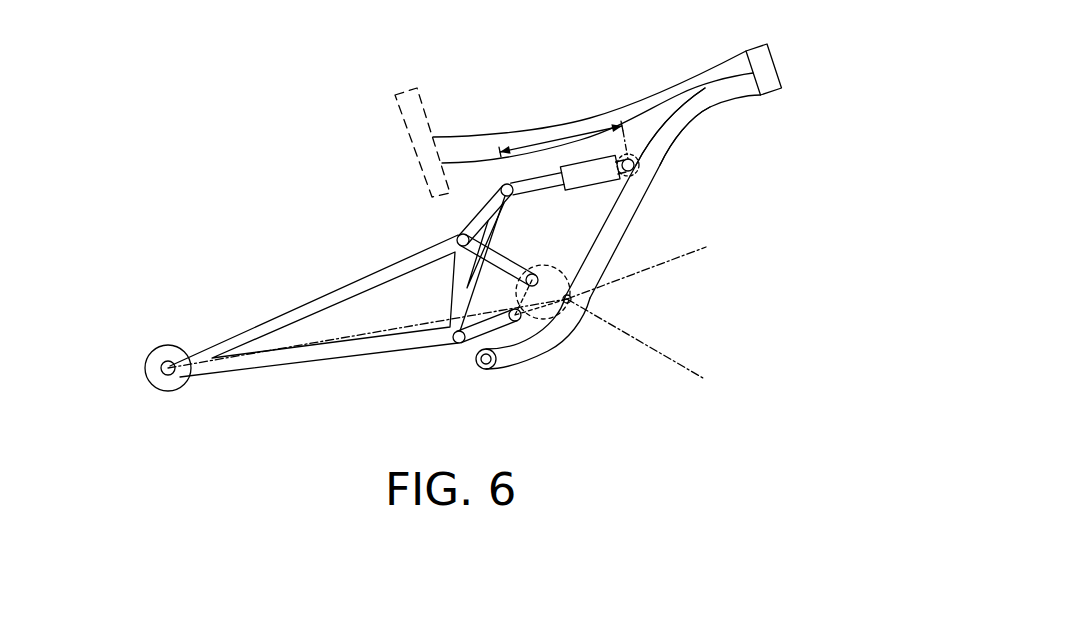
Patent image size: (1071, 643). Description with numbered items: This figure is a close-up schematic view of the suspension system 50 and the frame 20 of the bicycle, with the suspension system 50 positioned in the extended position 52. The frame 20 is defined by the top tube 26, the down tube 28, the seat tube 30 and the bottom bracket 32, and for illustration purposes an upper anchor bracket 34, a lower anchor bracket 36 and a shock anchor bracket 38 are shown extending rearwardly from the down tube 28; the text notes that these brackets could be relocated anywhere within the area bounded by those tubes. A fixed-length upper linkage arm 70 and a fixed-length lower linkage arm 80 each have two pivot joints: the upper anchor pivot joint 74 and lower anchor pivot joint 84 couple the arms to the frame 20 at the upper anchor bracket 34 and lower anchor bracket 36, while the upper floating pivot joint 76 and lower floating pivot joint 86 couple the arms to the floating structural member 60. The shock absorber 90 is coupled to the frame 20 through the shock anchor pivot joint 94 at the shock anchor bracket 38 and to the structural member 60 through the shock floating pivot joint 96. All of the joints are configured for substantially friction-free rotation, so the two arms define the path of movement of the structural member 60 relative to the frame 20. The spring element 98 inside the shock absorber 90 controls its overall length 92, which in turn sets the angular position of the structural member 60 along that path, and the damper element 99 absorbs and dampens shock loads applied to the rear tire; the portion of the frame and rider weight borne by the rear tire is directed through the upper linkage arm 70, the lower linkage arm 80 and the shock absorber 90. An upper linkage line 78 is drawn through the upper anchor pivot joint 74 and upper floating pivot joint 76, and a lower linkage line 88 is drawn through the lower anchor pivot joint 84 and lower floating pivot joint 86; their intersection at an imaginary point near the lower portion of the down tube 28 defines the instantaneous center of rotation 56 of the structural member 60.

The frame 20 is at (654, 226).
The top tube 26 is at (677, 73).
The down tube 28 is at (720, 108).
The seat tube 30 is at (402, 92).
The bottom bracket 32 is at (487, 370).
The upper anchor bracket 34 is at (558, 325).
The lower anchor bracket 36 is at (539, 344).
The shock anchor bracket 38 is at (640, 178).
The suspension system 50 is at (158, 152).
The extended position 52 is at (158, 389).
The instantaneous center of rotation 56 is at (572, 299).
The floating structural member 60 is at (283, 310).
The upper linkage arm 70 is at (500, 261).
The upper anchor pivot joint 74 is at (539, 280).
The upper floating pivot joint 76 is at (455, 238).
The upper linkage line 78 is at (698, 375).
The lower linkage arm 80 is at (475, 317).
The lower anchor pivot joint 84 is at (515, 322).
The lower floating pivot joint 86 is at (457, 344).
The lower linkage line 88 is at (705, 248).
The shock absorber 90 is at (563, 181).
The overall length 92 is at (553, 139).
The shock anchor pivot joint 94 is at (640, 163).
The shock floating pivot joint 96 is at (505, 182).
The spring element 98 is at (637, 173).
The damper element 99 is at (670, 126).